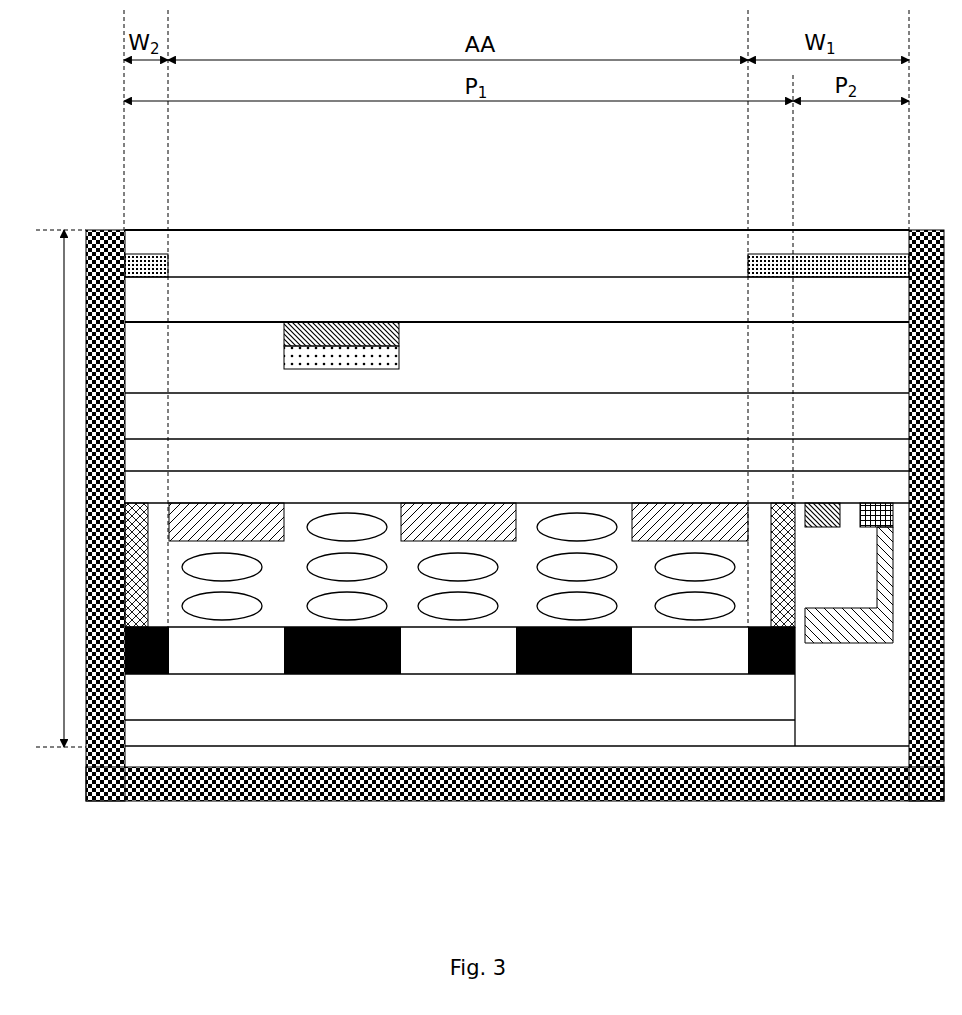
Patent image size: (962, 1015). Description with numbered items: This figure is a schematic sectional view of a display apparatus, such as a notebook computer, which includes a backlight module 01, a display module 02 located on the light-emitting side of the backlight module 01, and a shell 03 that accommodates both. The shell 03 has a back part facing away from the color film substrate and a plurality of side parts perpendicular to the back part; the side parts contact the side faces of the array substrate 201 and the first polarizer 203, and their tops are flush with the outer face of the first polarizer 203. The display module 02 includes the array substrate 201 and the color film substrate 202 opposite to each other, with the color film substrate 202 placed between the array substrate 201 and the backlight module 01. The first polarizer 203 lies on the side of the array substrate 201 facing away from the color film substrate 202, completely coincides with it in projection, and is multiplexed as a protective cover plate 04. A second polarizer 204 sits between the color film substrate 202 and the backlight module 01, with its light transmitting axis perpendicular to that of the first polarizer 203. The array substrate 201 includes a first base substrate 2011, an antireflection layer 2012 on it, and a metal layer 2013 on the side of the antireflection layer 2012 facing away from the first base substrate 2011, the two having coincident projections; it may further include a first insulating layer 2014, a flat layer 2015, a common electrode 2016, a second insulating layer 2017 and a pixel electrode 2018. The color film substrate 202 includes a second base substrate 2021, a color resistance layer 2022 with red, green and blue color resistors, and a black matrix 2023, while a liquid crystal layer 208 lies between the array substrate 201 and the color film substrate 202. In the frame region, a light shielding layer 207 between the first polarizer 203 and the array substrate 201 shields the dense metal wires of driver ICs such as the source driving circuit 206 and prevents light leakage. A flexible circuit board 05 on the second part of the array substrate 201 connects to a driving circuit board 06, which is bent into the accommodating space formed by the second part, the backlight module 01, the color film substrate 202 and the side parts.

The backlight module 01 is at (132, 759).
The display module 02 is at (46, 488).
The shell 03 is at (883, 801).
The protective cover plate 04 is at (193, 249).
The flexible circuit board 05 is at (865, 527).
The driving circuit board 06 is at (860, 632).
The array substrate 201 is at (698, 160).
The first base substrate 2011 is at (267, 307).
The antireflection layer 2012 is at (328, 322).
The metal layer 2013 is at (383, 360).
The first insulating layer 2014 is at (447, 360).
The flat layer 2015 is at (513, 415).
The common electrode 2016 is at (568, 455).
The second insulating layer 2017 is at (628, 485).
The pixel electrode 2018 is at (686, 520).
The color film substrate 202 is at (608, 864).
The second base substrate 2021 is at (447, 674).
The color resistance layer 2022 is at (250, 654).
The black matrix 2023 is at (606, 674).
The first polarizer 203 is at (169, 211).
The second polarizer 204 is at (795, 733).
The source driving circuit 206 is at (822, 527).
The light shielding layer 207 is at (855, 256).
The liquid crystal layer 208 is at (716, 606).